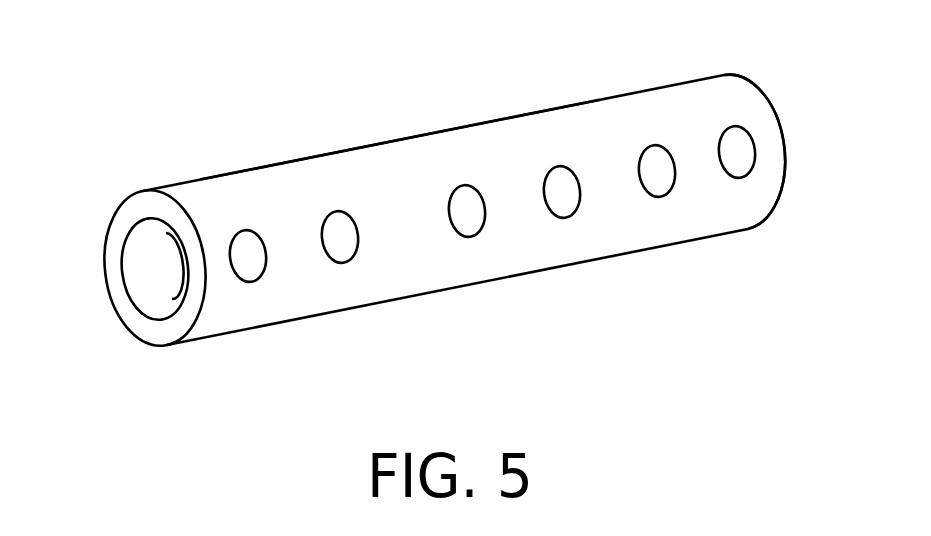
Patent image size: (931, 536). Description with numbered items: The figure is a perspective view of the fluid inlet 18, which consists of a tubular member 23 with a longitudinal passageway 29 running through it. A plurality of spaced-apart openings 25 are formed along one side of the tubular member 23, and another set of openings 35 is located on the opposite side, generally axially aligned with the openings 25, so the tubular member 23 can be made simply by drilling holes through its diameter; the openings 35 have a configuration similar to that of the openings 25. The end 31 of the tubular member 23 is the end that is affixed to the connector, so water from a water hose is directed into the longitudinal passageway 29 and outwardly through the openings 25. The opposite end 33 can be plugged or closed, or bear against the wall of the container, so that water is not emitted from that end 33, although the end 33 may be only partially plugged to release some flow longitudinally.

The fluid inlet 18 is at (554, 70).
The tubular member 23 is at (397, 167).
The openings 25 is at (342, 253).
The longitudinal passageway 29 is at (150, 297).
The end 31 is at (136, 208).
The end 33 is at (783, 128).
The openings 35 is at (173, 258).